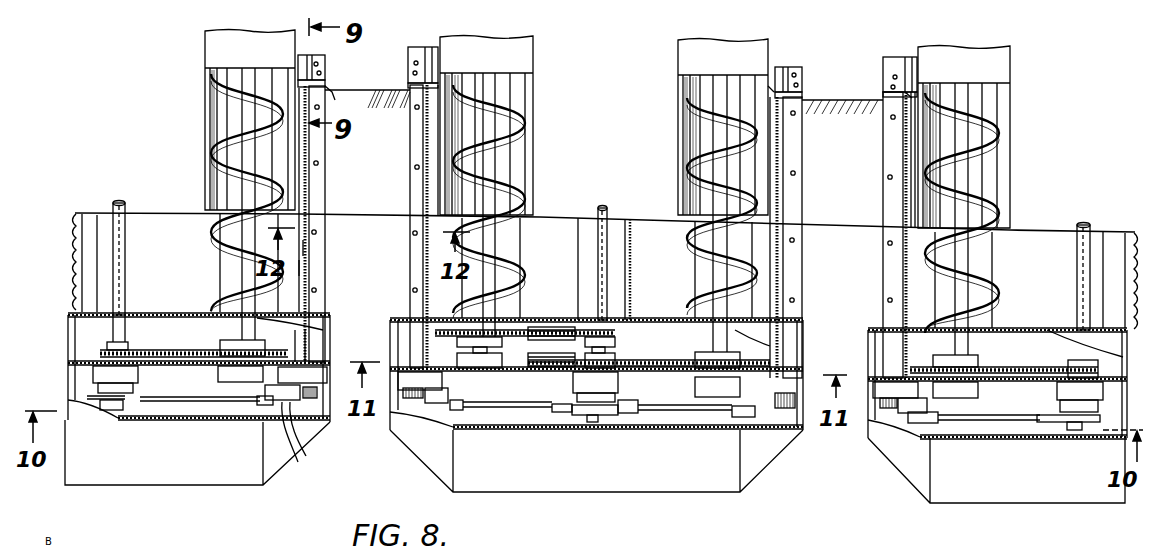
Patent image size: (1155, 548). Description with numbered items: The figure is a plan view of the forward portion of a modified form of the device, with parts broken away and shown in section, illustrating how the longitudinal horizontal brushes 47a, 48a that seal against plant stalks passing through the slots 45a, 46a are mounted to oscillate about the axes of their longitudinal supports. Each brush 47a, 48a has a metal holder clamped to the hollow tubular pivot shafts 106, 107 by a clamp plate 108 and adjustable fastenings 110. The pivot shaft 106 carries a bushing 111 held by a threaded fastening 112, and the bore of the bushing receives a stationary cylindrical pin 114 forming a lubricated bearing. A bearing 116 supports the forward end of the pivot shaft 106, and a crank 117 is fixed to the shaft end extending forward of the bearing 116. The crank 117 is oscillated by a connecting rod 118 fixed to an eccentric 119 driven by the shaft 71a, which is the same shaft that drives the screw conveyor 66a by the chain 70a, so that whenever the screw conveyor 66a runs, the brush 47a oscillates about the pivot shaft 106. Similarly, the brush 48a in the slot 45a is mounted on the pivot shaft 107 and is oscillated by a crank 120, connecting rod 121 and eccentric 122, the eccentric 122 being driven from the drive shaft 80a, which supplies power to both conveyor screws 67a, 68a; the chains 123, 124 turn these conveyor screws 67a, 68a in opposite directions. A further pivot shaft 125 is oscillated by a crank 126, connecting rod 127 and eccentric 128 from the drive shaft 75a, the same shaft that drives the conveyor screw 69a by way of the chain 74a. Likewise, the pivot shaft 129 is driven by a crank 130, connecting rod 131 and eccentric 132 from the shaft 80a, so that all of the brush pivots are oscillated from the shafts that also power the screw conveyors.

The slot 45a is at (456, 399).
The slot 46a is at (618, 396).
The longitudinal horizontal brush 47a is at (336, 90).
The longitudinal horizontal brush 48a is at (378, 90).
The screw conveyor 66a is at (226, 156).
The conveyor screw 67a is at (515, 125).
The conveyor screw 68a is at (700, 160).
The conveyor screw 69a is at (990, 209).
The chain 70a is at (178, 350).
The shaft 71a is at (115, 206).
The chain 74a is at (1012, 368).
The drive shaft 75a is at (1089, 228).
The drive shaft 80a is at (600, 212).
The pivot shaft 106 is at (300, 353).
The pivot shaft 107 is at (326, 268).
The clamp plate 108 is at (326, 248).
The adjustable fastening 110 is at (320, 165).
The bushing 111 is at (346, 104).
The threaded fastening 112 is at (305, 88).
The stationary cylindrical pin 114 is at (297, 65).
The bearing 116 is at (317, 399).
The crank 117 is at (304, 439).
The connecting rod 118 is at (215, 402).
The eccentric 119 is at (130, 411).
The crank 120 is at (448, 393).
The connecting rod 121 is at (512, 410).
The eccentric 122 is at (583, 415).
The chain 123 is at (520, 330).
The chain 124 is at (662, 360).
The pivot shaft 125 is at (910, 90).
The crank 126 is at (921, 424).
The connecting rod 127 is at (1010, 421).
The eccentric 128 is at (1065, 431).
The pivot shaft 129 is at (772, 86).
The crank 130 is at (756, 418).
The connecting rod 131 is at (705, 414).
The eccentric 132 is at (618, 416).